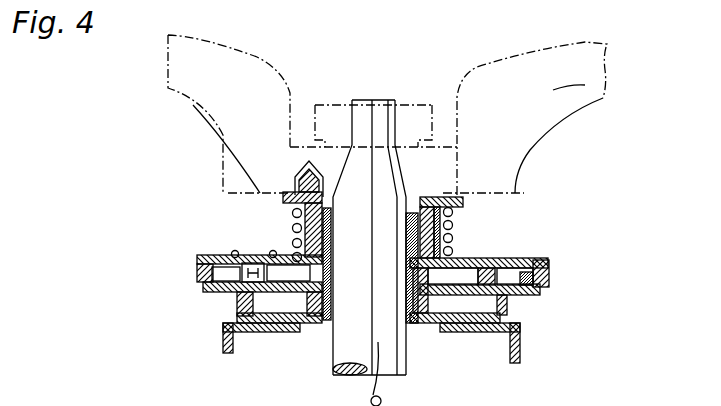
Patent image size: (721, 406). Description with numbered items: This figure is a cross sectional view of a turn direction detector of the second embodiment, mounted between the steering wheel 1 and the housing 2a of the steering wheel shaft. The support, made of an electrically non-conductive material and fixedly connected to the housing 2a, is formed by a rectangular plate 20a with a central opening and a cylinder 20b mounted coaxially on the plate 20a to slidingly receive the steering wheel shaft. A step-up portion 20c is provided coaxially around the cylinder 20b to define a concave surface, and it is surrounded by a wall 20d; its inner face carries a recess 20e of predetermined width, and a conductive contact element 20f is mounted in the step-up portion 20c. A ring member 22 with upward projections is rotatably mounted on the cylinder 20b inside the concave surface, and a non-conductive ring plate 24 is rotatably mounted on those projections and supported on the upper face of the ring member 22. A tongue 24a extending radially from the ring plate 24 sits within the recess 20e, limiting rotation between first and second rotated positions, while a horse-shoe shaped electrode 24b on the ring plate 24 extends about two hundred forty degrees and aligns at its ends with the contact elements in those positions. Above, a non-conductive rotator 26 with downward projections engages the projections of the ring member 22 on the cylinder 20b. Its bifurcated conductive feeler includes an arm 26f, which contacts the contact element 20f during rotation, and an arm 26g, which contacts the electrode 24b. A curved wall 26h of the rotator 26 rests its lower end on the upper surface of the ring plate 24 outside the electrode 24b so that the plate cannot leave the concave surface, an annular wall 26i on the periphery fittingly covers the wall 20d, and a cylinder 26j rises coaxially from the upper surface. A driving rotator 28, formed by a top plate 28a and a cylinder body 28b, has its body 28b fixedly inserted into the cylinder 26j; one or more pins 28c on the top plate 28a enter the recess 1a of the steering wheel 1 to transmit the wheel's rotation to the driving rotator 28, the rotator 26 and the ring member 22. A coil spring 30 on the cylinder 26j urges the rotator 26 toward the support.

The steering wheel 1 is at (590, 84).
The recess 1a is at (303, 185).
The housing 2a is at (520, 353).
The rectangular plate 20a is at (450, 305).
The cylinder 20b is at (428, 262).
The step-up portion 20c is at (533, 278).
The wall 20d is at (197, 275).
The recess 20e is at (200, 306).
The contact element 20f is at (204, 289).
The ring member 22 is at (428, 298).
The ring plate 24 is at (470, 312).
The tongue 24a is at (238, 294).
The electrode 24b is at (310, 323).
The rotator 26 is at (550, 261).
The arm 26f is at (262, 318).
The arm 26g is at (273, 293).
The curved wall 26h is at (262, 282).
The annular wall 26i is at (199, 263).
The cylinder 26j is at (442, 243).
The driving rotator 28 is at (333, 195).
The top plate 28a is at (283, 195).
The cylinder body 28b is at (455, 212).
The pin 28c is at (298, 183).
The coil spring 30 is at (291, 227).